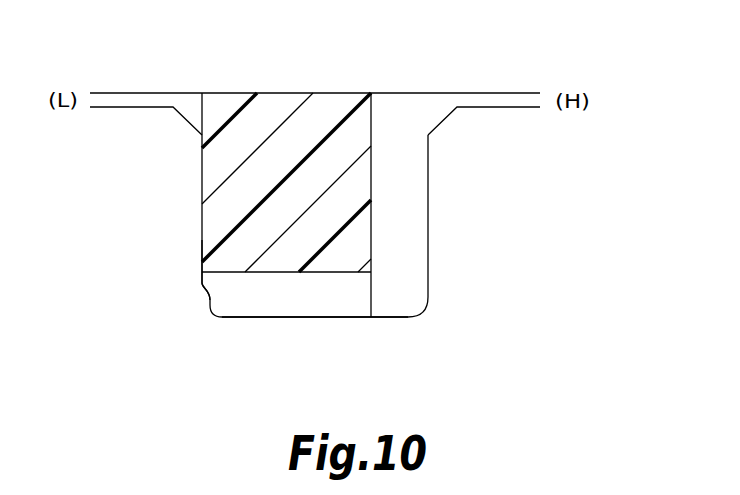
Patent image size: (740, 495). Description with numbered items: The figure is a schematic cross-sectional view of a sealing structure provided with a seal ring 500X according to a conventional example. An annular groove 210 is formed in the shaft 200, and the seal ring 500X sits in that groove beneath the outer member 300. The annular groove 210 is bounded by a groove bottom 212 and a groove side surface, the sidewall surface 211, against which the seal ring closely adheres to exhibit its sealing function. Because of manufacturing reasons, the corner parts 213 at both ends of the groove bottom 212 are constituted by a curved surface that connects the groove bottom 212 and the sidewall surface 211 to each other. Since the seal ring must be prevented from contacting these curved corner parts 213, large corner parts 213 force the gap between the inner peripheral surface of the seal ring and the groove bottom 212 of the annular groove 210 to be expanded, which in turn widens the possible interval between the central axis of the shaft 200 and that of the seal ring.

The upper layer / level 300 is at (315, 73).
The shaft 200 is at (439, 205).
The annular groove 210 is at (417, 233).
The sidewall surface 211 is at (202, 168).
The groove bottom 212 is at (343, 317).
The corner parts 213 is at (203, 282).
The seal ring 500X is at (357, 127).